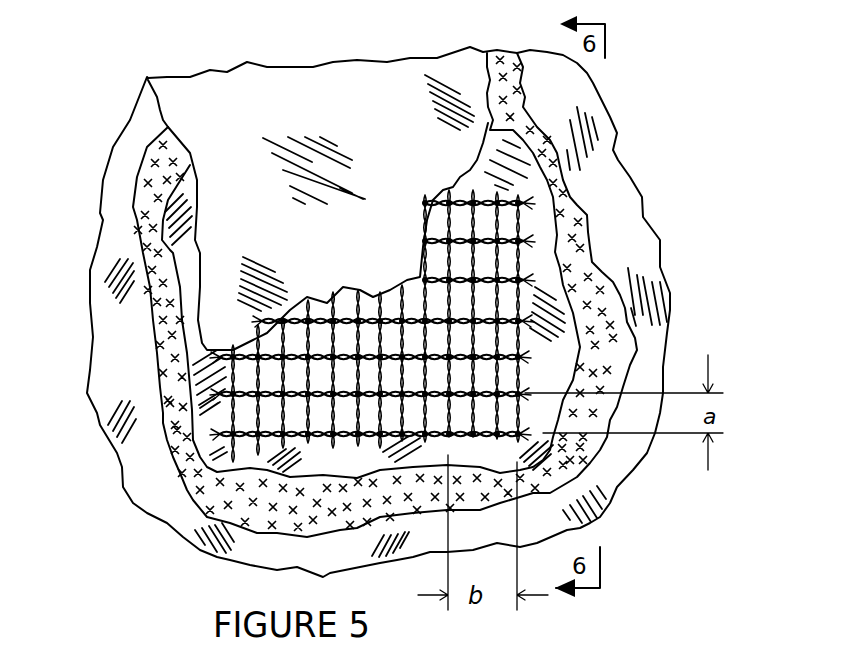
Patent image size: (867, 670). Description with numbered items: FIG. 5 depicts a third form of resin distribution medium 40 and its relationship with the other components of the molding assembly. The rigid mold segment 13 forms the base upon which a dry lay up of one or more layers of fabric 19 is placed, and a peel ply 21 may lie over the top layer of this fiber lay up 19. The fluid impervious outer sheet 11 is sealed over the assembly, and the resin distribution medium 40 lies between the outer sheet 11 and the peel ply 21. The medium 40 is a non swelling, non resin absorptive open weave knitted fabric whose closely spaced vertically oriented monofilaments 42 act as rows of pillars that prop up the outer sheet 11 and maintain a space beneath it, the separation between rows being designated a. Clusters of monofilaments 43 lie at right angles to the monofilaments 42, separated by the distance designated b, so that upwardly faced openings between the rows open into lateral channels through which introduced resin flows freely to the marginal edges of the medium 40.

The outer sheet 11 is at (220, 213).
The rigid mold segment 13 is at (105, 330).
The fabric 19 is at (568, 217).
The peel ply 21 is at (510, 140).
The resin distribution medium 40 is at (469, 393).
The monofilaments 42 is at (528, 295).
The clusters of monofilaments 43 is at (528, 384).